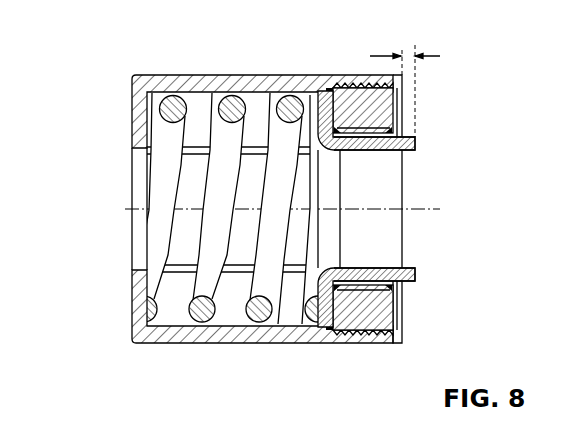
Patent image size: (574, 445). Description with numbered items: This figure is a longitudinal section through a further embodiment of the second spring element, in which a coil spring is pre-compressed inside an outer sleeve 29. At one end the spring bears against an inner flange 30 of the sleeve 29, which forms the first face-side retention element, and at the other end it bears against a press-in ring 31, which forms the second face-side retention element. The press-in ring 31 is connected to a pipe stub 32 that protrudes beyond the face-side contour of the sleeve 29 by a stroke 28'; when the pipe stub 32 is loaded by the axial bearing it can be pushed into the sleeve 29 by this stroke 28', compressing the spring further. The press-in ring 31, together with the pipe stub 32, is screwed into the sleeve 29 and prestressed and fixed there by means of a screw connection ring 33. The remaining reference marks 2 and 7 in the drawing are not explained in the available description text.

The compression spring 2 is at (149, 168).
The housing 7 is at (271, 352).
The sleeve 29 is at (247, 83).
The inner flange 30 is at (134, 126).
The press-in ring 31 is at (334, 270).
The pipe stub 32 is at (385, 270).
The screw connection ring 33 is at (390, 118).
The stroke 28' is at (389, 76).